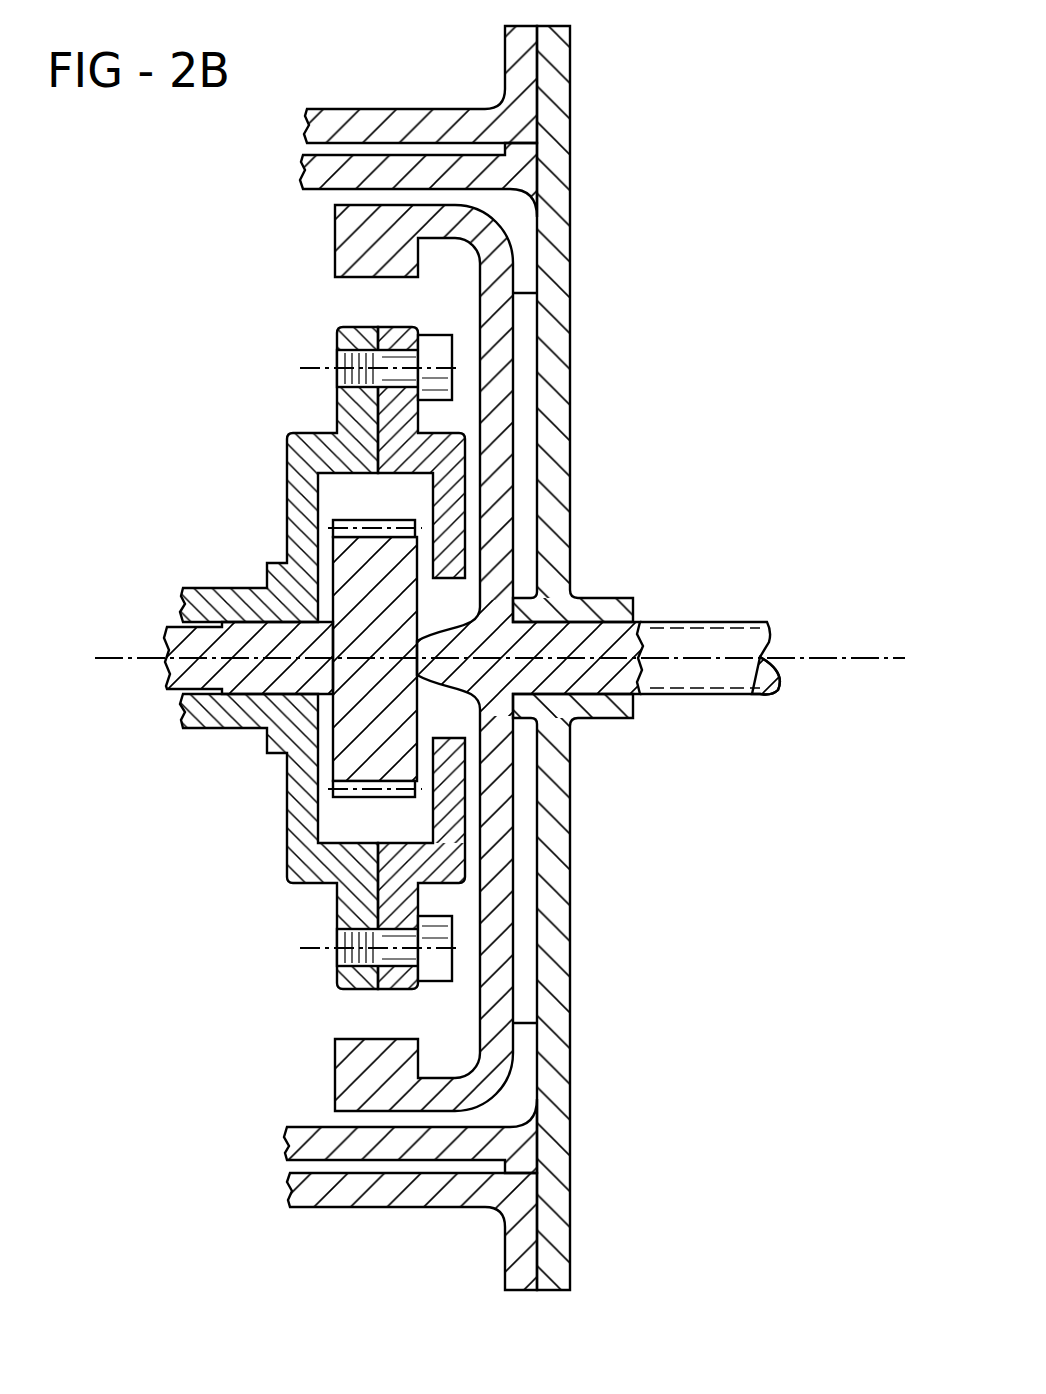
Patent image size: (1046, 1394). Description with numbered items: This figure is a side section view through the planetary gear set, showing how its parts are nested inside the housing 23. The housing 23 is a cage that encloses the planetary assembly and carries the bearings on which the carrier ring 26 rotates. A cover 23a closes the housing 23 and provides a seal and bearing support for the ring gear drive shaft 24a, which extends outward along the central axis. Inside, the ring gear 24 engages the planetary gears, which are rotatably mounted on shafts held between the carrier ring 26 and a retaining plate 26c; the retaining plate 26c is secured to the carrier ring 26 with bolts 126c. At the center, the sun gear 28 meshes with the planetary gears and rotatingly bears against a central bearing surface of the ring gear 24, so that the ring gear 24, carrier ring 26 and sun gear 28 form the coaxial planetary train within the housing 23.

The housing 23 is at (426, 109).
The cover 23a is at (570, 168).
The ring gear 24 is at (520, 298).
The ring gear drive shaft 24a is at (720, 622).
The carrier ring 26 is at (287, 492).
The retaining plate 26c is at (467, 502).
The bolts 126c is at (452, 352).
The sun gear 28 is at (418, 604).